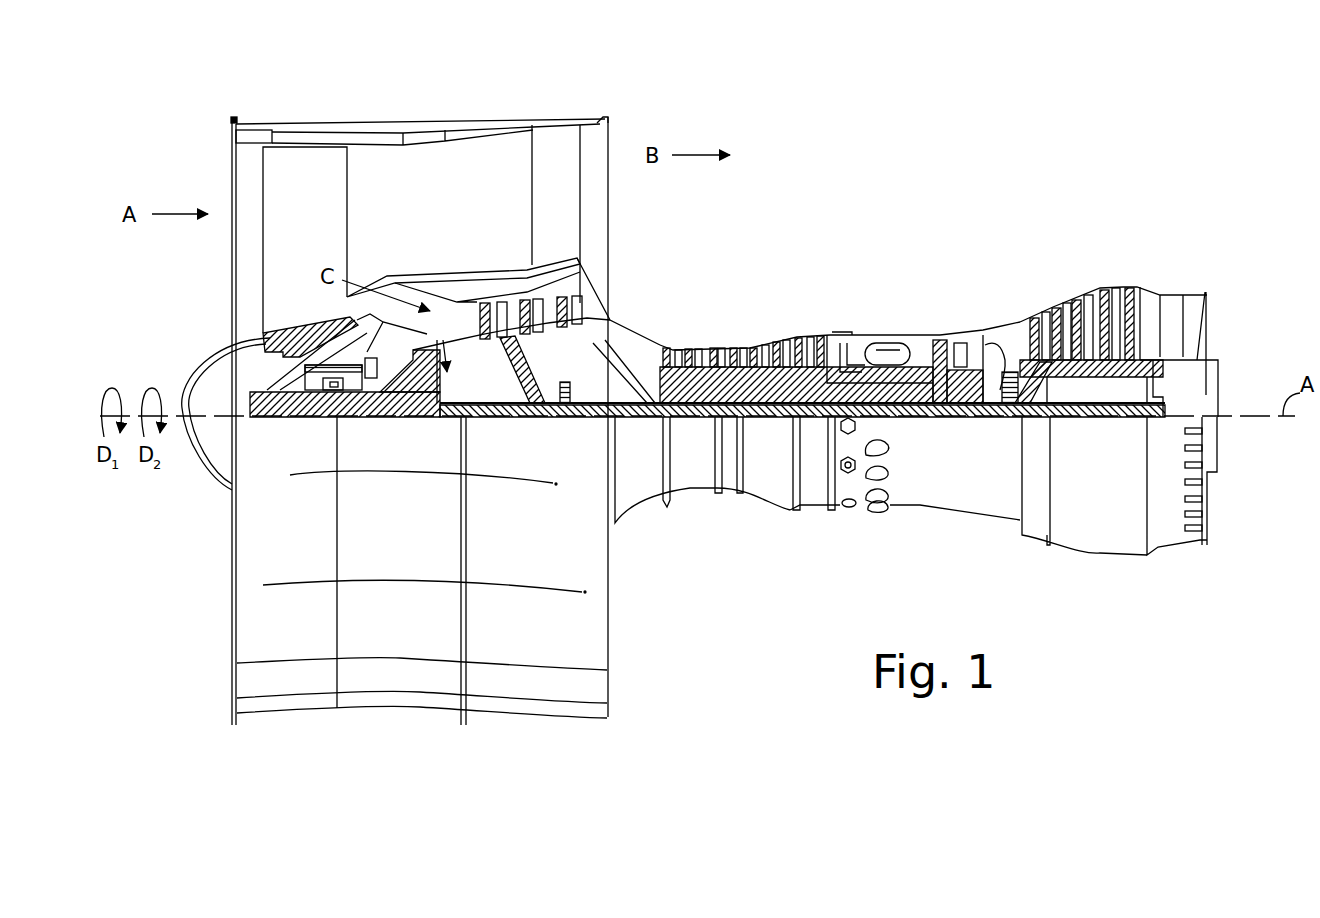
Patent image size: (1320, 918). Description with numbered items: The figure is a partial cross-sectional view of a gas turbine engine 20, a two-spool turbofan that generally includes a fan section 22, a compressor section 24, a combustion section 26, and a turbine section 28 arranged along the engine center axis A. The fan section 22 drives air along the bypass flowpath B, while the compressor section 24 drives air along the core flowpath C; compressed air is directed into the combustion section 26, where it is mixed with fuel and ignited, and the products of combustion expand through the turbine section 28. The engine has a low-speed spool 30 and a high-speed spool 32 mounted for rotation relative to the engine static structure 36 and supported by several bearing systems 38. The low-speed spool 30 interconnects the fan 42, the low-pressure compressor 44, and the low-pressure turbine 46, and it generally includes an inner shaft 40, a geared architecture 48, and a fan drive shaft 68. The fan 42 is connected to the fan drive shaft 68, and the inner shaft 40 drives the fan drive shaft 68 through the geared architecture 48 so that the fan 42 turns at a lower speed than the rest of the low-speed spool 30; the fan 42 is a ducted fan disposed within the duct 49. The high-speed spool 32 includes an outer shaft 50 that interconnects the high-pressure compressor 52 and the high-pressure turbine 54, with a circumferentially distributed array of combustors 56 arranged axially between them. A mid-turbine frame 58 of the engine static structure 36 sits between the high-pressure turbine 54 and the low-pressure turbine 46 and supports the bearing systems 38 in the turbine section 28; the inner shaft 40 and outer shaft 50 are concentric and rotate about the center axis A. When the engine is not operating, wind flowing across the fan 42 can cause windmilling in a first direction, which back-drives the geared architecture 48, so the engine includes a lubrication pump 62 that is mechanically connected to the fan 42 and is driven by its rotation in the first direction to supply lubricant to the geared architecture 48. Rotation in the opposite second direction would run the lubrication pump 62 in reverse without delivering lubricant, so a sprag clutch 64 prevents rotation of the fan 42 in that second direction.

The gas turbine engine 20 is at (1054, 130).
The fan section 22 is at (440, 95).
The compressor section 24 is at (826, 225).
The combustion section 26 is at (935, 223).
The turbine section 28 is at (1163, 223).
The low-speed spool 30 is at (767, 430).
The high-speed spool 32 is at (800, 375).
The engine static structure 36 is at (818, 518).
The bearing systems 38 is at (563, 407).
The inner shaft 40 is at (628, 427).
The fan 42 is at (316, 223).
The low-pressure compressor 44 is at (541, 324).
The low-pressure turbine 46 is at (1100, 312).
The geared architecture 48 is at (425, 395).
The duct 49 is at (252, 130).
The outer shaft 50 is at (897, 395).
The high-pressure compressor 52 is at (727, 388).
The high-pressure turbine 54 is at (955, 380).
The combustors 56 is at (880, 356).
The mid-turbine frame 58 is at (1000, 326).
The lubrication pump 62 is at (372, 380).
The sprag clutch 64 is at (333, 385).
The fan drive shaft 68 is at (270, 398).